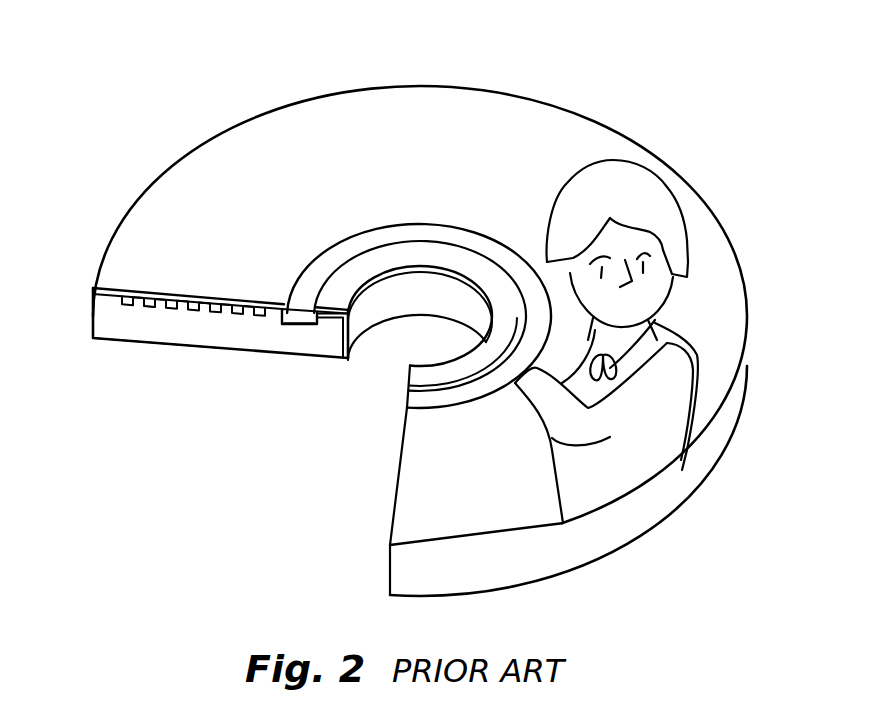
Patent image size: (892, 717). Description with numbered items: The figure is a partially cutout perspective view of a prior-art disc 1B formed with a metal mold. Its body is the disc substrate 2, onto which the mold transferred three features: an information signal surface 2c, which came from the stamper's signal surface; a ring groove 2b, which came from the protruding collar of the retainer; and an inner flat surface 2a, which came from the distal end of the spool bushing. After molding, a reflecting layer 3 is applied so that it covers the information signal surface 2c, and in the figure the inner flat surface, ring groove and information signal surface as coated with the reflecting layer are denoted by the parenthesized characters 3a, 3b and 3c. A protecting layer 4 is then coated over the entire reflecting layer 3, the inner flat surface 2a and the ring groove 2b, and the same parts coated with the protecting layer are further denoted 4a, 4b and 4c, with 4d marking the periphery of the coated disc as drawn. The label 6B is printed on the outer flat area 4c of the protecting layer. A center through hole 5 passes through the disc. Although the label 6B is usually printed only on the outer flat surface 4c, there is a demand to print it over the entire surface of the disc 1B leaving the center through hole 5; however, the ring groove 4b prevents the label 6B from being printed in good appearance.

The disc 1B is at (290, 35).
The disc substrate 2 is at (185, 313).
The inner flat surface 2a is at (331, 316).
The ring groove 2b is at (296, 327).
The information signal surface 2c is at (232, 315).
The reflecting layer 3 is at (147, 305).
The inner flat surface coated with reflecting layer 3a is at (326, 374).
The ring groove coated with reflecting layer 3b is at (273, 376).
The information signal surface coated with reflecting layer 3c is at (178, 395).
The protecting layer 4 is at (127, 289).
The inner flat surface coated with protecting layer 4a is at (462, 265).
The ring groove coated with protecting layer 4b is at (313, 287).
The outer flat area 4c is at (297, 145).
The outer peripheral edge of cover plate 4d is at (184, 155).
The center through hole 5 is at (407, 294).
The label 6B is at (633, 200).